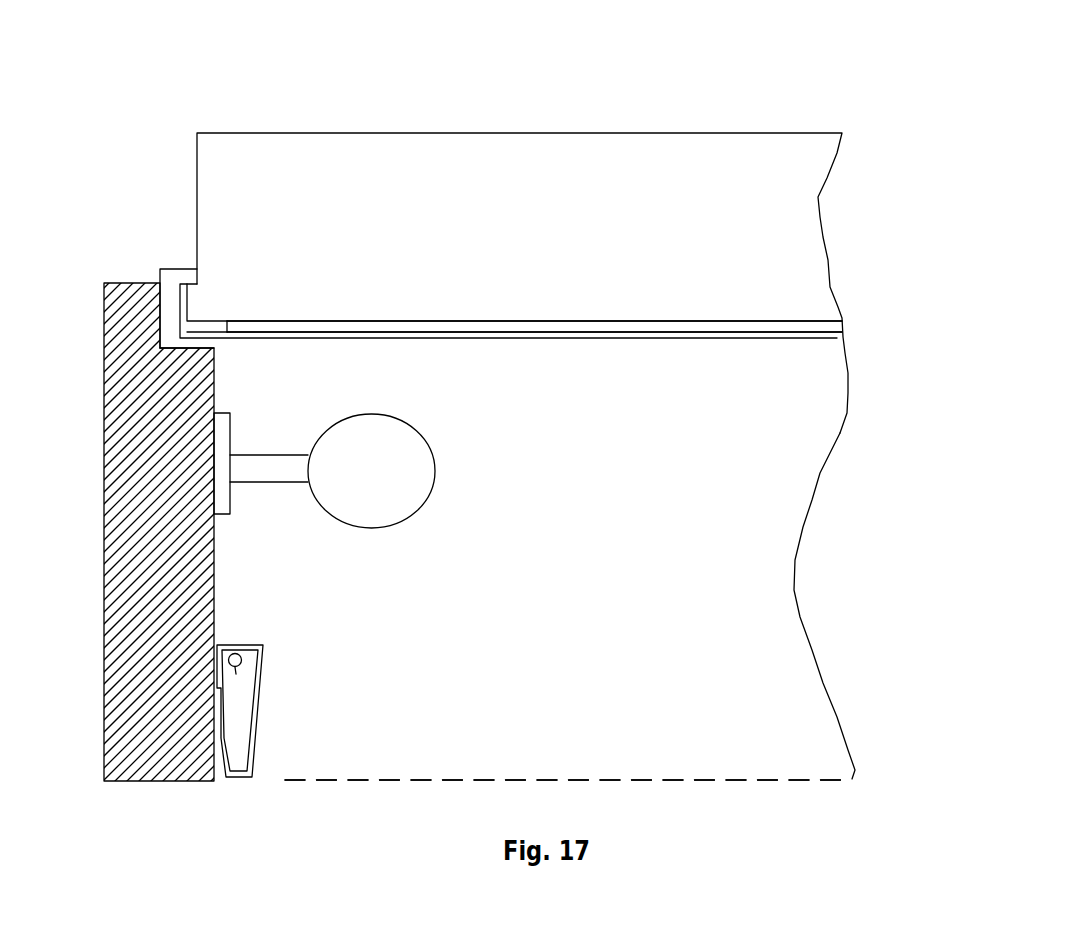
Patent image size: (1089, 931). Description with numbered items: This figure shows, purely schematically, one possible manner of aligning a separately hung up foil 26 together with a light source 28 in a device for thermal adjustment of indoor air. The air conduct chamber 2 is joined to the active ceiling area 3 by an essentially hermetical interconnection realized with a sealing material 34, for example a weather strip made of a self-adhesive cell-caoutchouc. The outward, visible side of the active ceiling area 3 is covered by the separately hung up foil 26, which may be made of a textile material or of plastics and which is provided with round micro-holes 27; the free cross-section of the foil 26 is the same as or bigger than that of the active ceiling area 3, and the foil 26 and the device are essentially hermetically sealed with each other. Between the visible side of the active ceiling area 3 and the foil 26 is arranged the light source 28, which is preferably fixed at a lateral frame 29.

The air conduct chamber 2 is at (485, 182).
The active ceiling area 3 is at (810, 335).
The separately hung up foil 26 is at (737, 776).
The micro-holes 27 is at (520, 776).
The light source 28 is at (382, 472).
The lateral frame 29 is at (175, 539).
The sealing material 34 is at (208, 326).